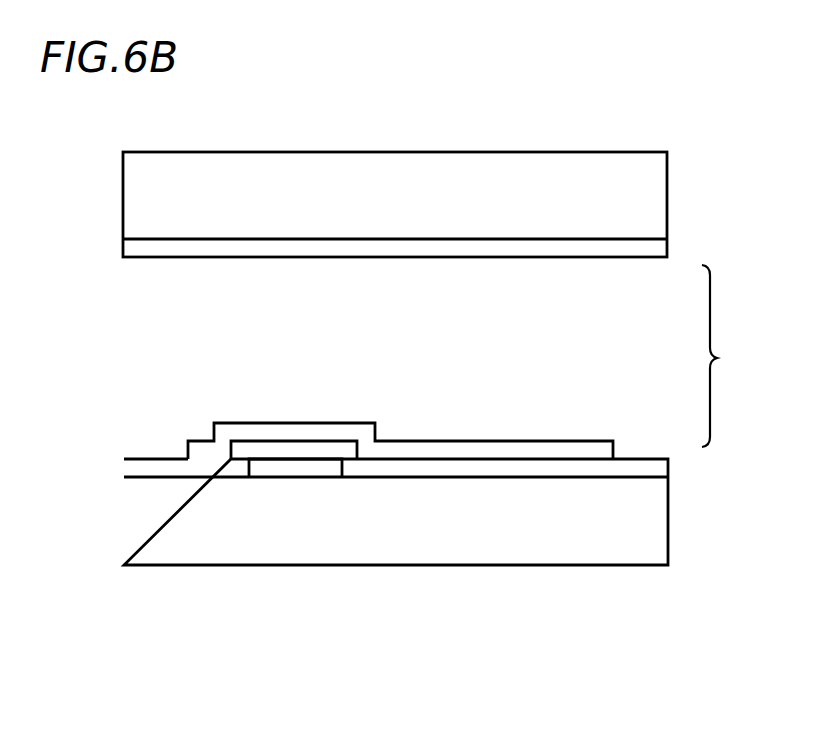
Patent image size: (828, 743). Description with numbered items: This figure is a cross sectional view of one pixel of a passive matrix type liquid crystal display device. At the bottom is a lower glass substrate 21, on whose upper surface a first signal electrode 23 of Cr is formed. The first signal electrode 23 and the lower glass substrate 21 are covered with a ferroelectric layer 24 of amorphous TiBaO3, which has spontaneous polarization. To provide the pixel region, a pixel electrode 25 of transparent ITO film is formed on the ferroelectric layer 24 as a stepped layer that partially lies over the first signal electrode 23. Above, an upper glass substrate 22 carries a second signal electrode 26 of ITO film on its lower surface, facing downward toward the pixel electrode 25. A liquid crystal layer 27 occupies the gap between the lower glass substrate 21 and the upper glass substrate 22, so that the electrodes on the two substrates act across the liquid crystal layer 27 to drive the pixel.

The lower glass substrate 21 is at (653, 515).
The upper glass substrate 22 is at (655, 204).
The first signal electrode 23 is at (309, 469).
The ferroelectric layer 24 is at (412, 468).
The pixel electrode 25 is at (215, 448).
The second signal electrode 26 is at (566, 247).
The liquid crystal layer 27 is at (731, 356).